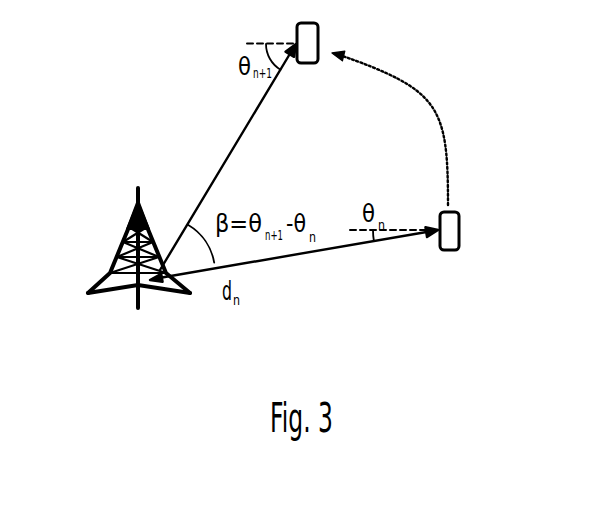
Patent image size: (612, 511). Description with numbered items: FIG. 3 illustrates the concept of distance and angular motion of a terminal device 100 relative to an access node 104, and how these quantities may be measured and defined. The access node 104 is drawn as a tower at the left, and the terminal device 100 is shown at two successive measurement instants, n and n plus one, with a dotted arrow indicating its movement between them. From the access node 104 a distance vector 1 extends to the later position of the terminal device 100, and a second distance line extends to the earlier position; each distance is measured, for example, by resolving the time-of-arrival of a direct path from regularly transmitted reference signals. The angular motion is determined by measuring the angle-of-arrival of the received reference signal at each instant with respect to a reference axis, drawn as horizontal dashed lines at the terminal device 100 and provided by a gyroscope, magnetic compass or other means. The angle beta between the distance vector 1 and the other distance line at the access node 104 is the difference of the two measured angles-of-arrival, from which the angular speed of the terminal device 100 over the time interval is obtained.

The terminal device 100 is at (318, 26).
The access node 104 is at (137, 198).
The distance vector d(n+1) 1 is at (228, 157).